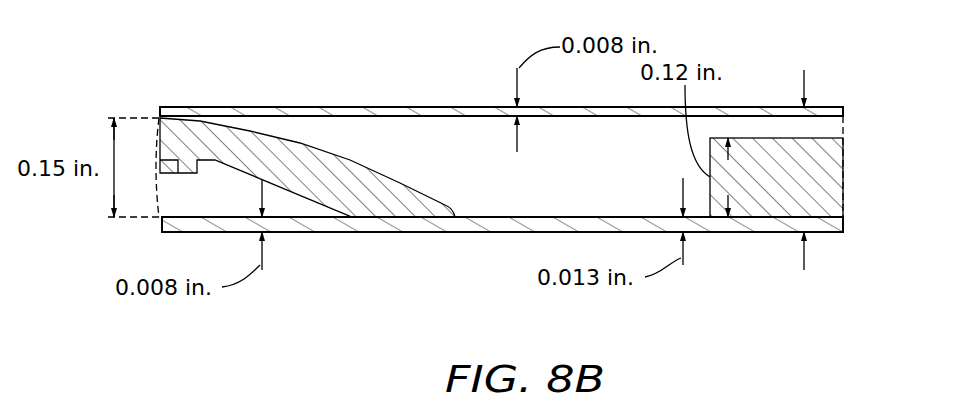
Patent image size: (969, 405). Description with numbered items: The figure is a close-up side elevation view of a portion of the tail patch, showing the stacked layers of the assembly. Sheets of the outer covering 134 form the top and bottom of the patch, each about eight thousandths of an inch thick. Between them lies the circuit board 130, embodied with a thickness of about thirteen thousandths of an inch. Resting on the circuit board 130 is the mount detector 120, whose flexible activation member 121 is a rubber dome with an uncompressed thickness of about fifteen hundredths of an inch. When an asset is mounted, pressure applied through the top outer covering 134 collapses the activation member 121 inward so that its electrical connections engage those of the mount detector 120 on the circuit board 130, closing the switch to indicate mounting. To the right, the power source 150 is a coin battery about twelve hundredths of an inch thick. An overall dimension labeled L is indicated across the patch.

The mount detector 120 is at (358, 148).
The flexible activation member 121 is at (244, 138).
The circuit board 130 is at (560, 215).
The top outer covering 134 is at (448, 107).
The power source 150 is at (832, 185).
The length L is at (806, 72).